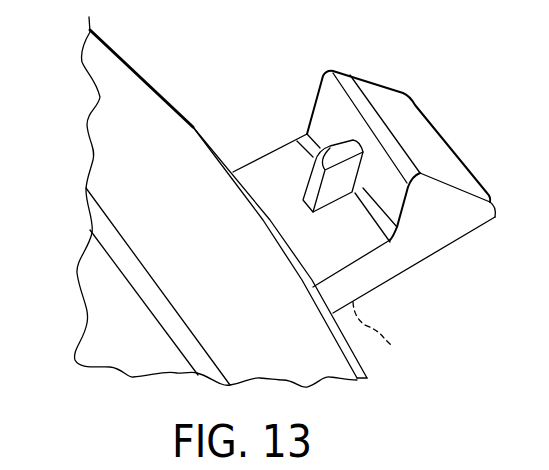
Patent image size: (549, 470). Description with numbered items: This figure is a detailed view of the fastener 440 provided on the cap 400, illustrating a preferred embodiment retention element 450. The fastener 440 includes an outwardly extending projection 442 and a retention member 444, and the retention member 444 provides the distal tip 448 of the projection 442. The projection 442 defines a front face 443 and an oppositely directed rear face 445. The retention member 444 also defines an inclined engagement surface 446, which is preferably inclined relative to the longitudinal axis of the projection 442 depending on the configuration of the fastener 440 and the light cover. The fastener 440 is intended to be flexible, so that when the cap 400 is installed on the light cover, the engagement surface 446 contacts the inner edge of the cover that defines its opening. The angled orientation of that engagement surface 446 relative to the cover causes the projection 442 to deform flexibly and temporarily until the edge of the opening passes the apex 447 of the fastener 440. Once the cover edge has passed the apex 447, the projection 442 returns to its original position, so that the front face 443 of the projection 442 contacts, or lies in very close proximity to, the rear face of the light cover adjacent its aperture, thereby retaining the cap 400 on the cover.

The cap 400 is at (115, 153).
The fastener 440 is at (343, 33).
The projection 442 is at (403, 252).
The front face 443 is at (320, 253).
The retention member 444 is at (430, 212).
The rear face 445 is at (384, 342).
The engagement surface 446 is at (415, 130).
The apex 447 is at (360, 102).
The distal tip 448 is at (496, 219).
The retention element 450 is at (313, 183).